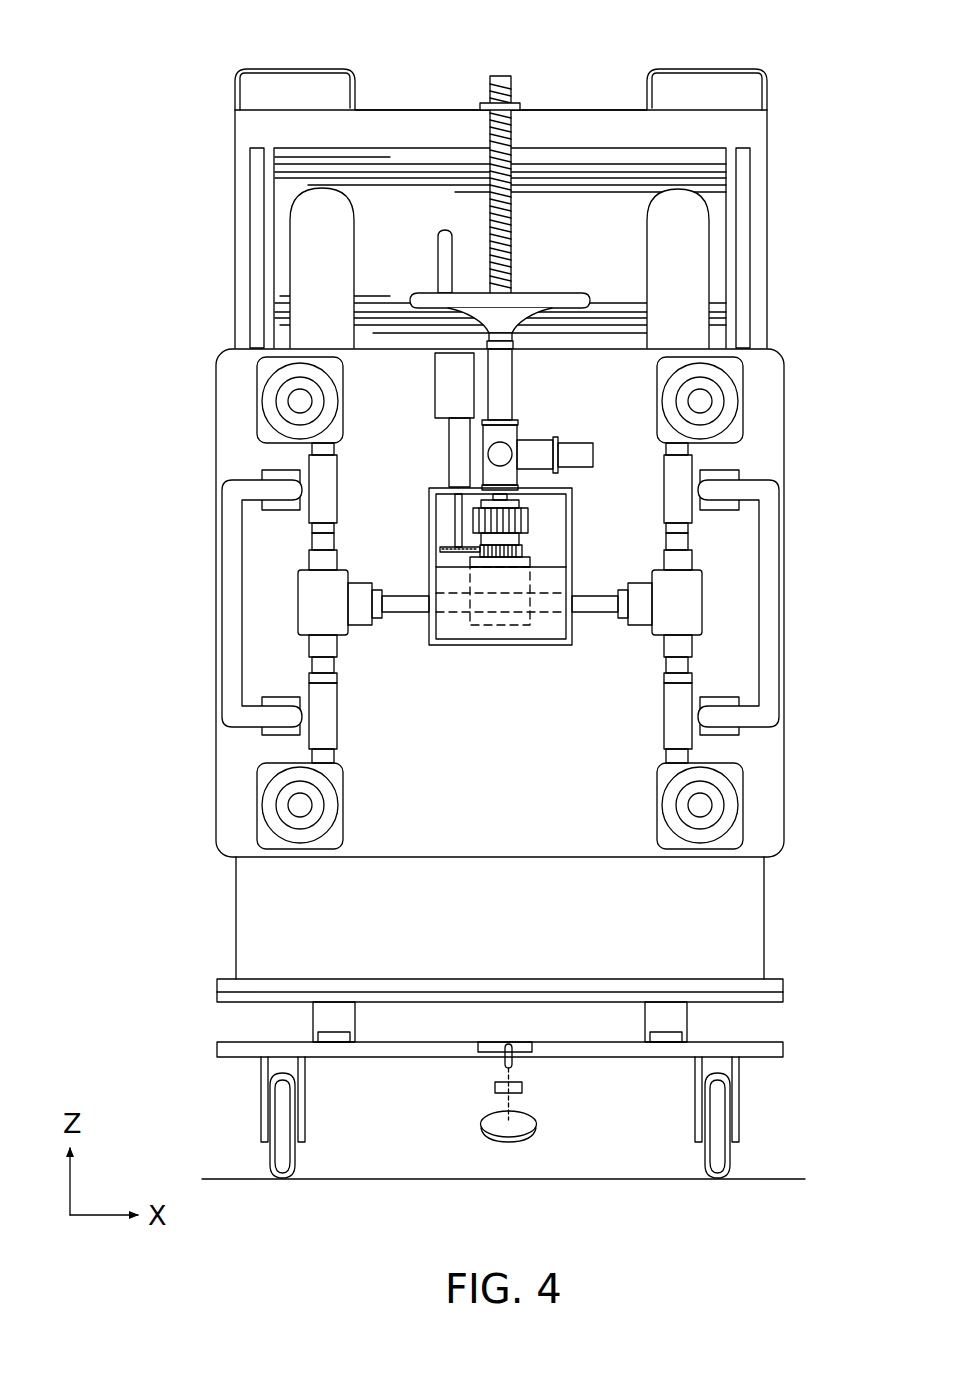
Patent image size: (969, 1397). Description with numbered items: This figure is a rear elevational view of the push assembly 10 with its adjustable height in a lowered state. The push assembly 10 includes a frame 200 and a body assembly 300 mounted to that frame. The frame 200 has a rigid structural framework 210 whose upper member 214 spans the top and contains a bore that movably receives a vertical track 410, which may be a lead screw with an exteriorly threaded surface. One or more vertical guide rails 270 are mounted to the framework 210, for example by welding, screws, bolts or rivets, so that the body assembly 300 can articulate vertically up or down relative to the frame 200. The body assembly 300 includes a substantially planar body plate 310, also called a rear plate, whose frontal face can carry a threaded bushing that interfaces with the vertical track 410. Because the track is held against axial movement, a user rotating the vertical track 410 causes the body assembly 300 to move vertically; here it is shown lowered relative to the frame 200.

The push assembly 10 is at (162, 54).
The frame 200 is at (221, 122).
The structural framework 210 is at (757, 126).
The upper member 214 is at (418, 123).
The vertical guide rails 270 is at (258, 272).
The vertical track 410 is at (507, 220).
The body assembly 300 is at (792, 596).
The body plate 310 is at (767, 807).